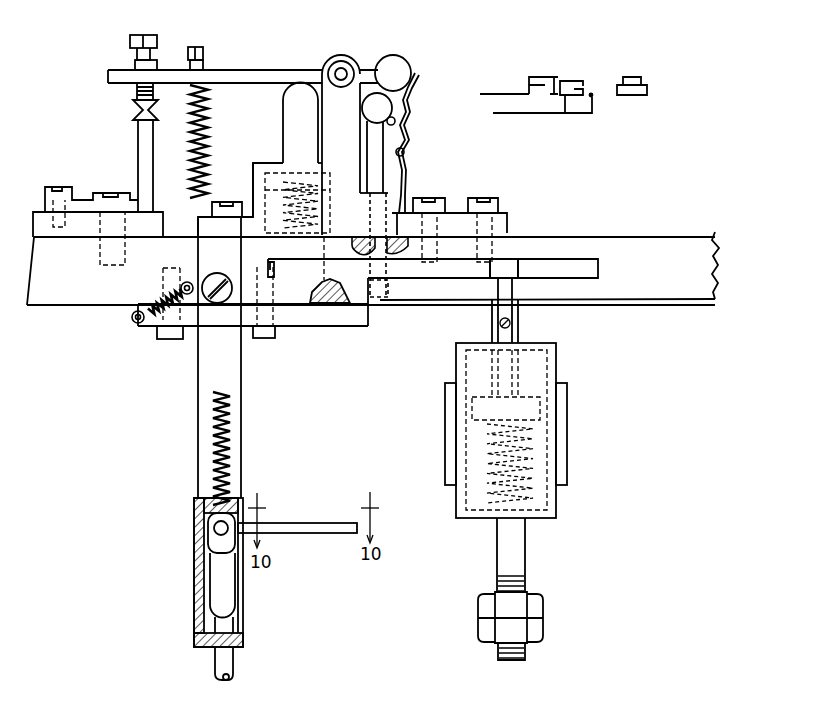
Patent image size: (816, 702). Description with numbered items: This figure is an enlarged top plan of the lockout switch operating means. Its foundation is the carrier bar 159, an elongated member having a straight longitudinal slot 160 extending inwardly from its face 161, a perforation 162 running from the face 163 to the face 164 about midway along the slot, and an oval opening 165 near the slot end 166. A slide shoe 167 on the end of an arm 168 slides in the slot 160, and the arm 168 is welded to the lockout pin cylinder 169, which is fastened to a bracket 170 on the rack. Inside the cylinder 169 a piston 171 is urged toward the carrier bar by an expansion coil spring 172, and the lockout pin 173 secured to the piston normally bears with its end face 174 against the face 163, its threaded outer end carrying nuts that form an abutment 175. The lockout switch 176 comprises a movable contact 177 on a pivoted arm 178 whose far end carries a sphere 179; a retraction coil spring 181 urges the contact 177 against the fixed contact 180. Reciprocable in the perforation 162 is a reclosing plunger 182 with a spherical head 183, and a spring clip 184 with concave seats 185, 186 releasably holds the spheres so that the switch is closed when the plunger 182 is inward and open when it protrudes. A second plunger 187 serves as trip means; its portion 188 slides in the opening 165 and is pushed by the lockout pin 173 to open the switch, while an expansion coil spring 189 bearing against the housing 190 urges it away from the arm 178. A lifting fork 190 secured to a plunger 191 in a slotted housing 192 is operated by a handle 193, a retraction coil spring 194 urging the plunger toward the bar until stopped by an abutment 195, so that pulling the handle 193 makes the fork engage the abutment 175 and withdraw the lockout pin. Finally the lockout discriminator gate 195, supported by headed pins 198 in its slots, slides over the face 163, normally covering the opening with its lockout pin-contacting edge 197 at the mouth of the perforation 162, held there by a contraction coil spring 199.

The carrier bar 159 is at (648, 234).
The slot 160 is at (564, 266).
The face 161 is at (676, 249).
The perforation 162 is at (377, 229).
The face 163 is at (629, 301).
The face 164 is at (559, 227).
The oval opening 165 is at (311, 284).
The end of slot 166 is at (288, 281).
The slide shoe 167 is at (510, 260).
The arm 168 is at (503, 308).
The lockout pin cylinder 169 is at (557, 367).
The bracket 170 is at (567, 465).
The piston 171 is at (541, 405).
The expansion coil spring 172 is at (534, 443).
The lockout pin 173 is at (519, 335).
The end face 174 is at (519, 299).
The abutment 175 is at (555, 606).
The lockout switch 176 is at (414, 41).
The movable contact 177 is at (133, 106).
The arm 178 is at (253, 70).
The sphere 179 is at (406, 66).
The fixed contact 180 is at (137, 117).
The retraction coil spring 181 is at (208, 122).
The plunger 182 is at (379, 168).
The head 183 is at (384, 110).
The spring clip 184 is at (410, 143).
The concave seat 185 is at (395, 122).
The concave seat 186 is at (404, 153).
The second plunger 187 is at (287, 138).
The portion 188 is at (327, 286).
The expansion coil spring 189 is at (265, 190).
The lifting fork 190 is at (255, 175).
The plunger 191 is at (237, 511).
The slotted housing 192 is at (196, 589).
The handle 193 is at (218, 664).
The retraction coil spring 194 is at (232, 456).
The lockout discriminator gate 195 is at (192, 324).
The lockout pin-contacting edge 197 is at (373, 313).
The headed pins 198 is at (168, 337).
The contraction coil spring 199 is at (150, 301).